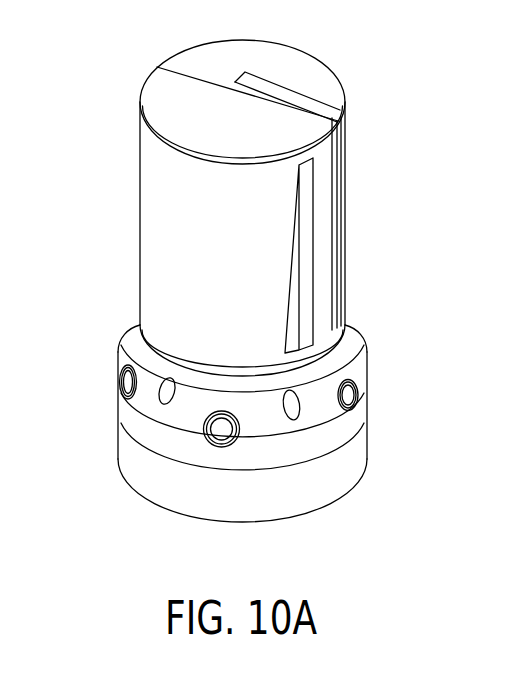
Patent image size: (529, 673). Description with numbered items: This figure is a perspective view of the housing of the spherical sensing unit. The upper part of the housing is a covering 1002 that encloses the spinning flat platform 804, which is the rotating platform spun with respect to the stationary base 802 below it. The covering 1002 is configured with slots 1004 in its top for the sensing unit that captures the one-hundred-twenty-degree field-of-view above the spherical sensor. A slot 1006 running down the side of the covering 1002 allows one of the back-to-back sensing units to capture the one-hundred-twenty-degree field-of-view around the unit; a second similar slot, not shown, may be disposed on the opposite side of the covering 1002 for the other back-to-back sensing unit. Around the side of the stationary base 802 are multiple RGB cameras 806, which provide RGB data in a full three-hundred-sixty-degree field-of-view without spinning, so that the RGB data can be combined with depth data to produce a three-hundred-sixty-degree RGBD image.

The covering 1002 is at (223, 52).
The slots 1004 is at (317, 100).
The slot 1006 is at (305, 282).
The stationary base 802 is at (153, 481).
The rotating platform 804 is at (150, 350).
The RGB cameras 806 is at (223, 437).